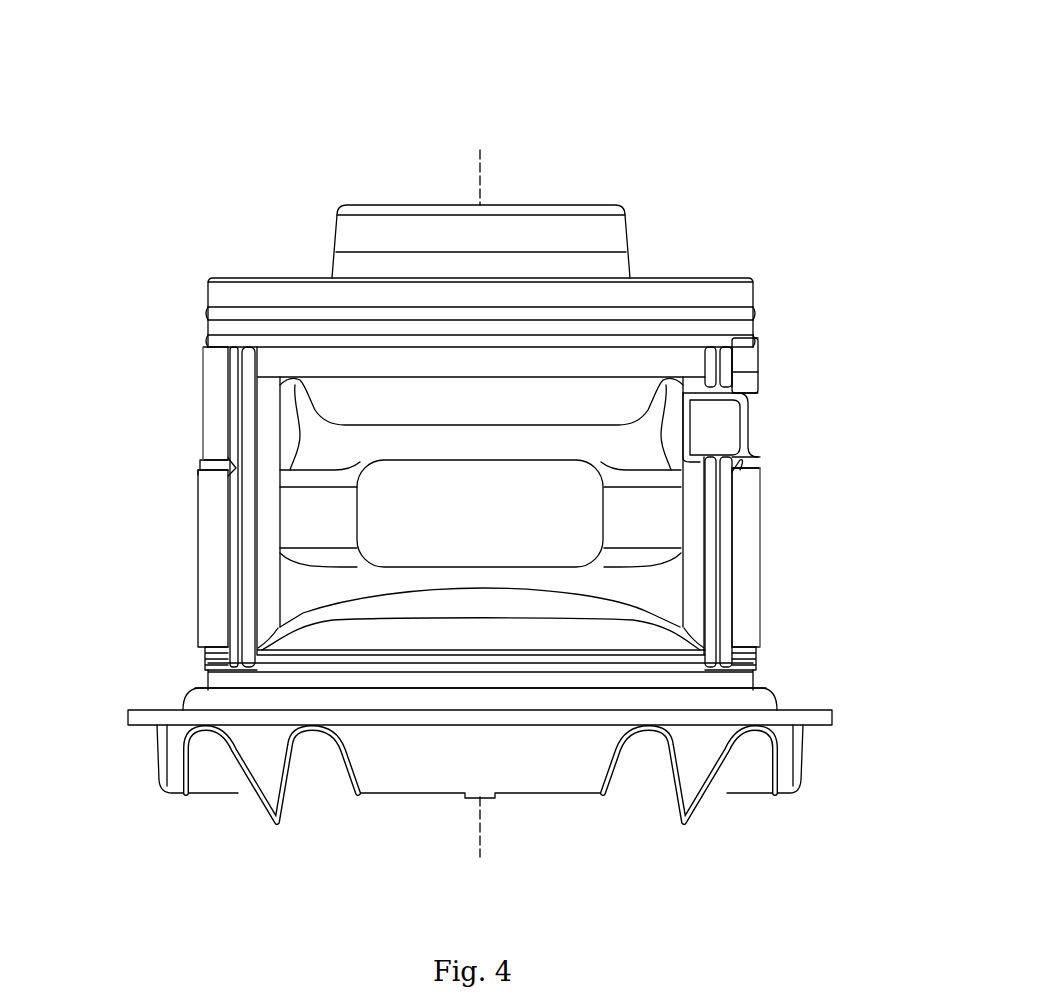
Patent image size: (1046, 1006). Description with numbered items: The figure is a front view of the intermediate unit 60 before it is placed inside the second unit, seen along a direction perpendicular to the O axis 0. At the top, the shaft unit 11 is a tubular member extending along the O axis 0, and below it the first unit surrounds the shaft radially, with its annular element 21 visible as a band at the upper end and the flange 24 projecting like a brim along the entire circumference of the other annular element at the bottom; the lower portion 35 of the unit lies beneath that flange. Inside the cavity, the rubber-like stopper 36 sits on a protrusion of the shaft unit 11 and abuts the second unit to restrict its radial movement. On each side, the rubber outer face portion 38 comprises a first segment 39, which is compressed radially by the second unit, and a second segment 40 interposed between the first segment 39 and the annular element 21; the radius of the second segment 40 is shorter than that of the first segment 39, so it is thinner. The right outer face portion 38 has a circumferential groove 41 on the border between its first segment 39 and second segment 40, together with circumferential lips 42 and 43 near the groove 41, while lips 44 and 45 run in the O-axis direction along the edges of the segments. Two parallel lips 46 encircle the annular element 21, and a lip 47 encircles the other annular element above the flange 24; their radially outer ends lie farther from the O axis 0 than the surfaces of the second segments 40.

The O axis 0 is at (478, 165).
The shaft unit 11 is at (565, 228).
The annular element 21 is at (670, 325).
The flange 24 is at (818, 722).
The lower housing 35 is at (548, 777).
The stopper 36 is at (503, 480).
The outer face portion 38 is at (105, 398).
The first segment 39 is at (215, 546).
The second segment 40 is at (218, 400).
The groove 41 is at (727, 438).
The lip 42 is at (200, 478).
The lip 43 is at (760, 375).
The lip 44 is at (250, 603).
The lip 45 is at (205, 663).
The lip 46 is at (208, 343).
The lip 47 is at (208, 676).
The intermediate unit 60 is at (780, 103).